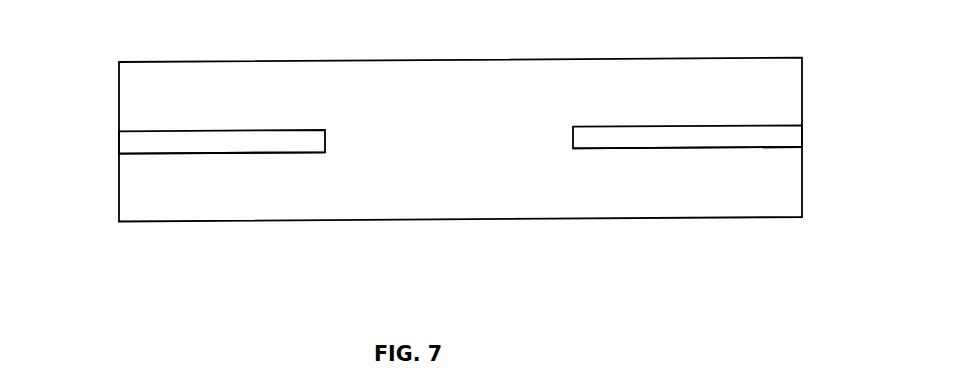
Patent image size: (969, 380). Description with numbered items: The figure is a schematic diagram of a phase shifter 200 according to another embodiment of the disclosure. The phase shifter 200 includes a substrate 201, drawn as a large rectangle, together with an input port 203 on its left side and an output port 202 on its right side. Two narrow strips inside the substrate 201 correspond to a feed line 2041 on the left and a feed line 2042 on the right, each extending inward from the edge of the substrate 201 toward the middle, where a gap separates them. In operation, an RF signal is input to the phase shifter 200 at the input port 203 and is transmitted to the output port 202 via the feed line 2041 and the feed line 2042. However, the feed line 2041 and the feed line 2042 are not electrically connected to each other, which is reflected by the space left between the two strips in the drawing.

The phase shifter 200 is at (97, 32).
The substrate 201 is at (803, 63).
The output port 202 is at (803, 142).
The input port 203 is at (119, 142).
The feed line 2041 is at (212, 153).
The feed line 2042 is at (703, 148).